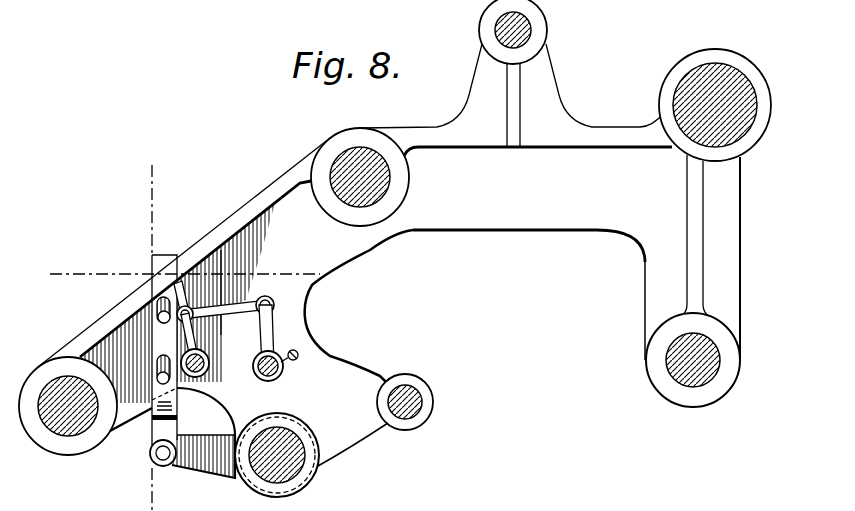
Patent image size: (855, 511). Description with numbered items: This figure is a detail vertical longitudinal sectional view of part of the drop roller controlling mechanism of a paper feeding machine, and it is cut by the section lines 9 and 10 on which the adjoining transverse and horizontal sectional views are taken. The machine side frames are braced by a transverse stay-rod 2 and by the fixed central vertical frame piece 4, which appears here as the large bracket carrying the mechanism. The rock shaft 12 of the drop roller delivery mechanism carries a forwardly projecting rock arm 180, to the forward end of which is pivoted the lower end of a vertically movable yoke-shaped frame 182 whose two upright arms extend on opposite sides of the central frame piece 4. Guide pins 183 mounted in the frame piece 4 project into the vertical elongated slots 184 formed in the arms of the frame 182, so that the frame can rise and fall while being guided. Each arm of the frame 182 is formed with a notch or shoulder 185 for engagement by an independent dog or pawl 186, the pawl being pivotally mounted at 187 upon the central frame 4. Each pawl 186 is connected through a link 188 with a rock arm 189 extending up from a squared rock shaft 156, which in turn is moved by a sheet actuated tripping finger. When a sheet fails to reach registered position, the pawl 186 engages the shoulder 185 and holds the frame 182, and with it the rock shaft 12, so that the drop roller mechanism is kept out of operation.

The transverse stay-rod 2 is at (684, 80).
The central vertical frame piece 4 is at (543, 214).
The section line 9— 9 is at (154, 322).
The section line 10— 10 is at (387, 276).
The rock shaft 12 is at (290, 466).
The squared rock shaft 156 is at (276, 372).
The rock arm 180 is at (201, 468).
The yoke-shaped frame 182 is at (176, 415).
The guide pins 183 is at (162, 381).
The vertical elongated slots 184 is at (157, 361).
The notch or shoulder 185 is at (178, 257).
The dog or pawl 186 is at (187, 263).
The pivot 187 is at (205, 368).
The link 188 is at (221, 308).
The rock arm 189 is at (270, 328).